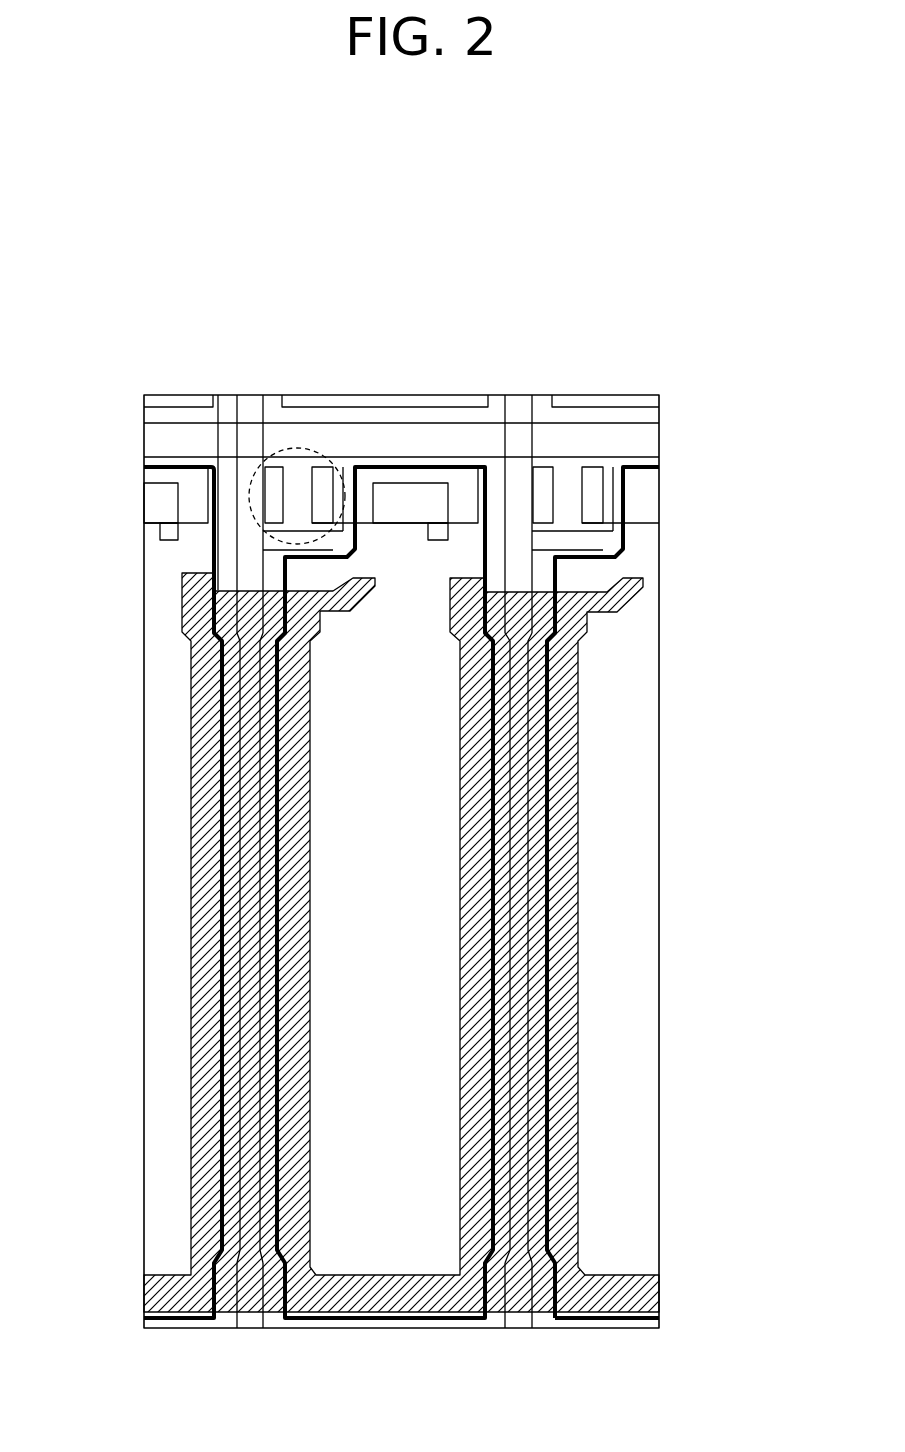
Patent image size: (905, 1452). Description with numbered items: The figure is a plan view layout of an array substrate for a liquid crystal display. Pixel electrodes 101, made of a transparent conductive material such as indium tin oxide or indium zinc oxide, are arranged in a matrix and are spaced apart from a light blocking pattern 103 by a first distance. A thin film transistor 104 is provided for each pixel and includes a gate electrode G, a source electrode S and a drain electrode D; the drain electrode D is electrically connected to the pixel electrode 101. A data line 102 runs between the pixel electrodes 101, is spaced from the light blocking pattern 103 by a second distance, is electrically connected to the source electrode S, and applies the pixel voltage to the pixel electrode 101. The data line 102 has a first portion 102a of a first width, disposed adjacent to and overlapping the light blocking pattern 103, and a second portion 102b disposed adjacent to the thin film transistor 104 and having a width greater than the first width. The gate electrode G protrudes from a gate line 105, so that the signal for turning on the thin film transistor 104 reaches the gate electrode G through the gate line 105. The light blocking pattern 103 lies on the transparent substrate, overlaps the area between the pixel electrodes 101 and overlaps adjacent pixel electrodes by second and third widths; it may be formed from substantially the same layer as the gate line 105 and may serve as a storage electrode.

The pixel electrode 101 is at (450, 1072).
The data line 102 is at (416, 861).
The first portion of the data line 102a is at (522, 673).
The second portion of the data line 102b is at (518, 576).
The light blocking pattern 103 is at (217, 938).
The thin film transistor 104 is at (250, 498).
The gate line 105 is at (633, 438).
The source electrode S is at (266, 470).
The gate electrode G is at (298, 523).
The drain electrode D is at (327, 483).